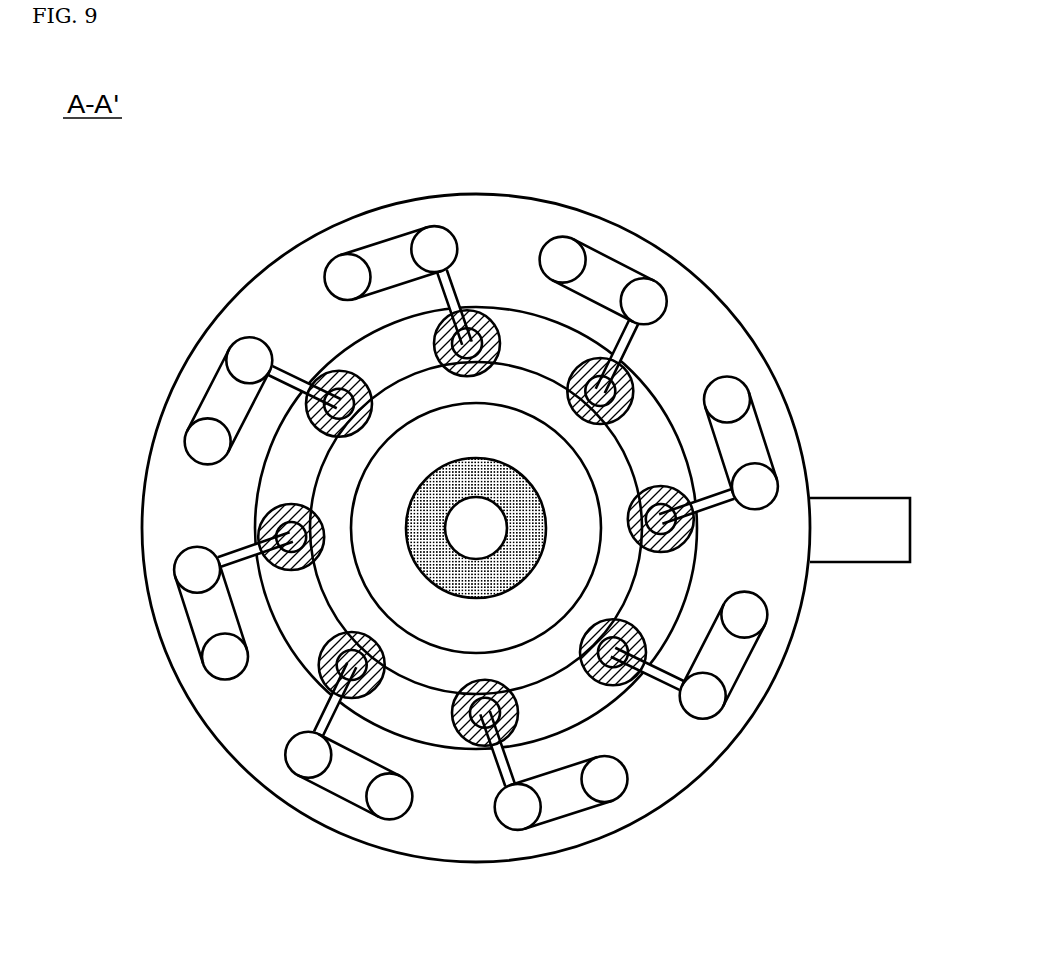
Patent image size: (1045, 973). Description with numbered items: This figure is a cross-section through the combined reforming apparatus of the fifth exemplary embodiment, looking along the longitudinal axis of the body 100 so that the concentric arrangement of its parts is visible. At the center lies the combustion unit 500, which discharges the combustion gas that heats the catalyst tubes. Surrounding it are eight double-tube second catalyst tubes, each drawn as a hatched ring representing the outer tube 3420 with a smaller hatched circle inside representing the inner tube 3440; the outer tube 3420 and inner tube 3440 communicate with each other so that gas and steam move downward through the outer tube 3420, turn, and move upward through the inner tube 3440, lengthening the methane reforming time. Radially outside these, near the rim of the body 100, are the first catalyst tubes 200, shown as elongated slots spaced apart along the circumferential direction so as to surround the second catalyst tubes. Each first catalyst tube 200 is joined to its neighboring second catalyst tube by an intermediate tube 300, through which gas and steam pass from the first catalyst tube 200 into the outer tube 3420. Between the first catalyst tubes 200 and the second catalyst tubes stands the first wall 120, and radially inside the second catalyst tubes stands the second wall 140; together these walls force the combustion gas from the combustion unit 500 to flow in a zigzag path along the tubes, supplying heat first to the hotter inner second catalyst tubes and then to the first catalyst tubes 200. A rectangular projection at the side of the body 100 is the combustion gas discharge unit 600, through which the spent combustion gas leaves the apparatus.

The body 100 is at (248, 260).
The first wall 120 is at (474, 300).
The second wall 140 is at (362, 482).
The first catalyst tube 200 is at (341, 252).
The intermediate tube 300 is at (638, 333).
The outer tube 3420 is at (634, 389).
The inner tube 3440 is at (598, 377).
The combustion unit 500 is at (512, 535).
The combustion gas discharge unit 600 is at (873, 491).